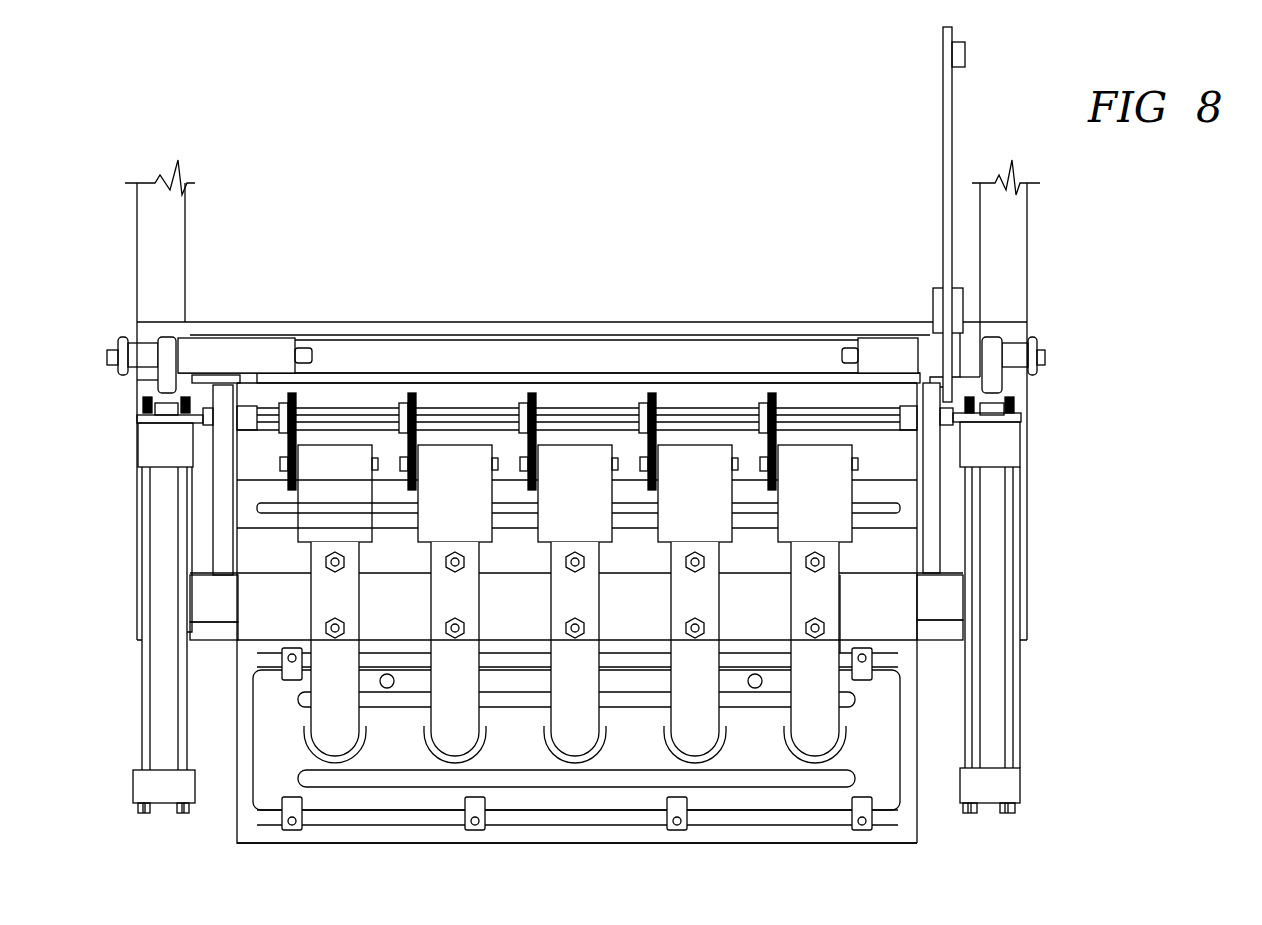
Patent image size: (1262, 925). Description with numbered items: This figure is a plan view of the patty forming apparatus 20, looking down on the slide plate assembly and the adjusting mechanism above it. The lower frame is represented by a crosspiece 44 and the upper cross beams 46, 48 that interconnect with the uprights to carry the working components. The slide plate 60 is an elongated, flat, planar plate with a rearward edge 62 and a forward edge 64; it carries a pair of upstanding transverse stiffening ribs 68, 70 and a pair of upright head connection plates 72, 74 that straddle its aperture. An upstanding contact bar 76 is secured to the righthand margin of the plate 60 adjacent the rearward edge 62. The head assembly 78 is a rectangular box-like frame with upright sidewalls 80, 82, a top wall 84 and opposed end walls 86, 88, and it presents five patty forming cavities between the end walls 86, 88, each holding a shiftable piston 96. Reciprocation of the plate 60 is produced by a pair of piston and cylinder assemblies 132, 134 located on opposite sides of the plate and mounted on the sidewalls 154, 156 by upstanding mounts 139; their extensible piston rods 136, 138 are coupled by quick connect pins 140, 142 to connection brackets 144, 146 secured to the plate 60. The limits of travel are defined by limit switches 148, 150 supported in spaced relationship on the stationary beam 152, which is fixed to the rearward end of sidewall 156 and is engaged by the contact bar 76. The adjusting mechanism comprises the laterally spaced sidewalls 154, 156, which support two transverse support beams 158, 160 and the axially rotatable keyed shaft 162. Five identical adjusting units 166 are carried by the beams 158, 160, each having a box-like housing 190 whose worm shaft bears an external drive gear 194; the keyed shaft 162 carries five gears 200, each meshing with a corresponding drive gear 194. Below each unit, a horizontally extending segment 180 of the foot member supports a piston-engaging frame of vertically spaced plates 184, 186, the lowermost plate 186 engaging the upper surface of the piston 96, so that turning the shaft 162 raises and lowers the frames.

The patty forming apparatus 20 is at (1146, 256).
The crosspiece 44 is at (160, 238).
The upper cross beam 46 is at (943, 637).
The upper cross beam 48 is at (520, 332).
The slide plate 60 is at (243, 805).
The rearward edge 62 is at (380, 335).
The forward edge 64 is at (440, 845).
The stiffening rib 68 is at (852, 548).
The stiffening rib 70 is at (816, 378).
The head connection plate 72 is at (382, 660).
The head connection plate 74 is at (362, 820).
The contact bar 76 is at (960, 302).
The head assembly 78 is at (257, 690).
The sidewall 80 is at (738, 670).
The sidewall 82 is at (757, 815).
The top wall 84 is at (785, 713).
The end wall 86 is at (900, 752).
The end wall 88 is at (253, 690).
The piston 96 is at (428, 760).
The piston and cylinder assembly 132 is at (160, 724).
The piston and cylinder assembly 134 is at (990, 655).
The piston rod 136 is at (163, 398).
The piston rod 138 is at (992, 398).
The upstanding mount 139 is at (153, 420).
The quick connect pin 140 is at (133, 342).
The quick connect pin 142 is at (1045, 360).
The connection bracket 144 is at (228, 355).
The connection bracket 146 is at (905, 355).
The limit switch 148 is at (958, 48).
The limit switch 150 is at (983, 317).
The stationary beam 152 is at (948, 165).
The sidewall 154 is at (220, 535).
The sidewall 156 is at (930, 477).
The support beam 158 is at (651, 563).
The support beam 160 is at (678, 440).
The keyed shaft 162 is at (660, 412).
The adjusting unit 166 is at (332, 440).
The horizontally extending segment 180 is at (614, 472).
The plate 184 is at (572, 618).
The plate 186 is at (583, 702).
The housing 190 is at (805, 502).
The drive gear 194 is at (773, 487).
The gear 200 is at (415, 405).